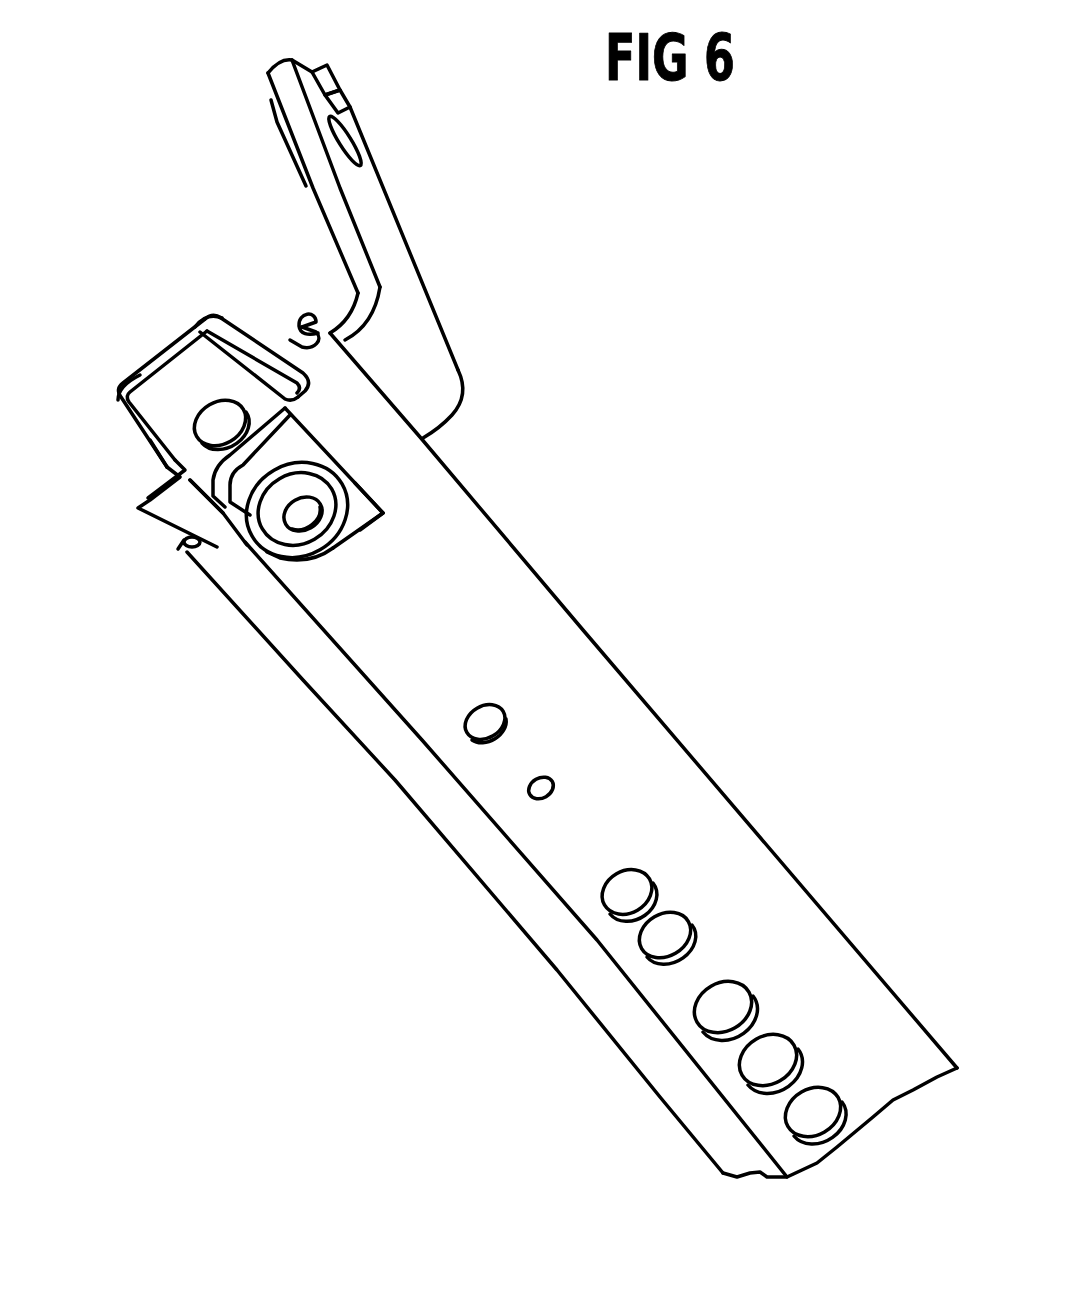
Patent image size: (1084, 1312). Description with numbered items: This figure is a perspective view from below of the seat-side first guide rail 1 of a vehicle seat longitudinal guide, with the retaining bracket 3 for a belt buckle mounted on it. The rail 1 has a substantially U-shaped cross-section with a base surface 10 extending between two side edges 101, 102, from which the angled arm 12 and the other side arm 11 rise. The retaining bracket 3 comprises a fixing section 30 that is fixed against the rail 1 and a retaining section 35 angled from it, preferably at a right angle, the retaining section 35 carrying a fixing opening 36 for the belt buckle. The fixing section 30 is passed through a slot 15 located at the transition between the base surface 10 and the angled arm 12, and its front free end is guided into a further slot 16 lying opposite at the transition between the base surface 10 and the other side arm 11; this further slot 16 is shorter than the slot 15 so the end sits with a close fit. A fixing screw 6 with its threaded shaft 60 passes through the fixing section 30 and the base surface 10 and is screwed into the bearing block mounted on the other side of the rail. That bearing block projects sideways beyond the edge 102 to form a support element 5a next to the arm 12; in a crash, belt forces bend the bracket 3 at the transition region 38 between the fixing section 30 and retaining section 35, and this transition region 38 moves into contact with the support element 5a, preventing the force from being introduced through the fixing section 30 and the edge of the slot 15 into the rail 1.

The first guide rail 1 is at (345, 727).
The retaining bracket 3 is at (337, 243).
The support element 5a is at (263, 327).
The fixing screw 6 is at (242, 543).
The base surface 10 is at (163, 350).
The other side arm 11 is at (147, 445).
The angled arm 12 is at (235, 317).
The slot 15 is at (360, 495).
The further slot 16 is at (228, 512).
The fixing section 30 is at (345, 540).
The retaining section 35 is at (388, 183).
The fixing opening 36 is at (347, 140).
The transition region 38 is at (463, 392).
The shaft 60 is at (277, 538).
The side edge 101 is at (117, 397).
The side edge 102 is at (217, 313).